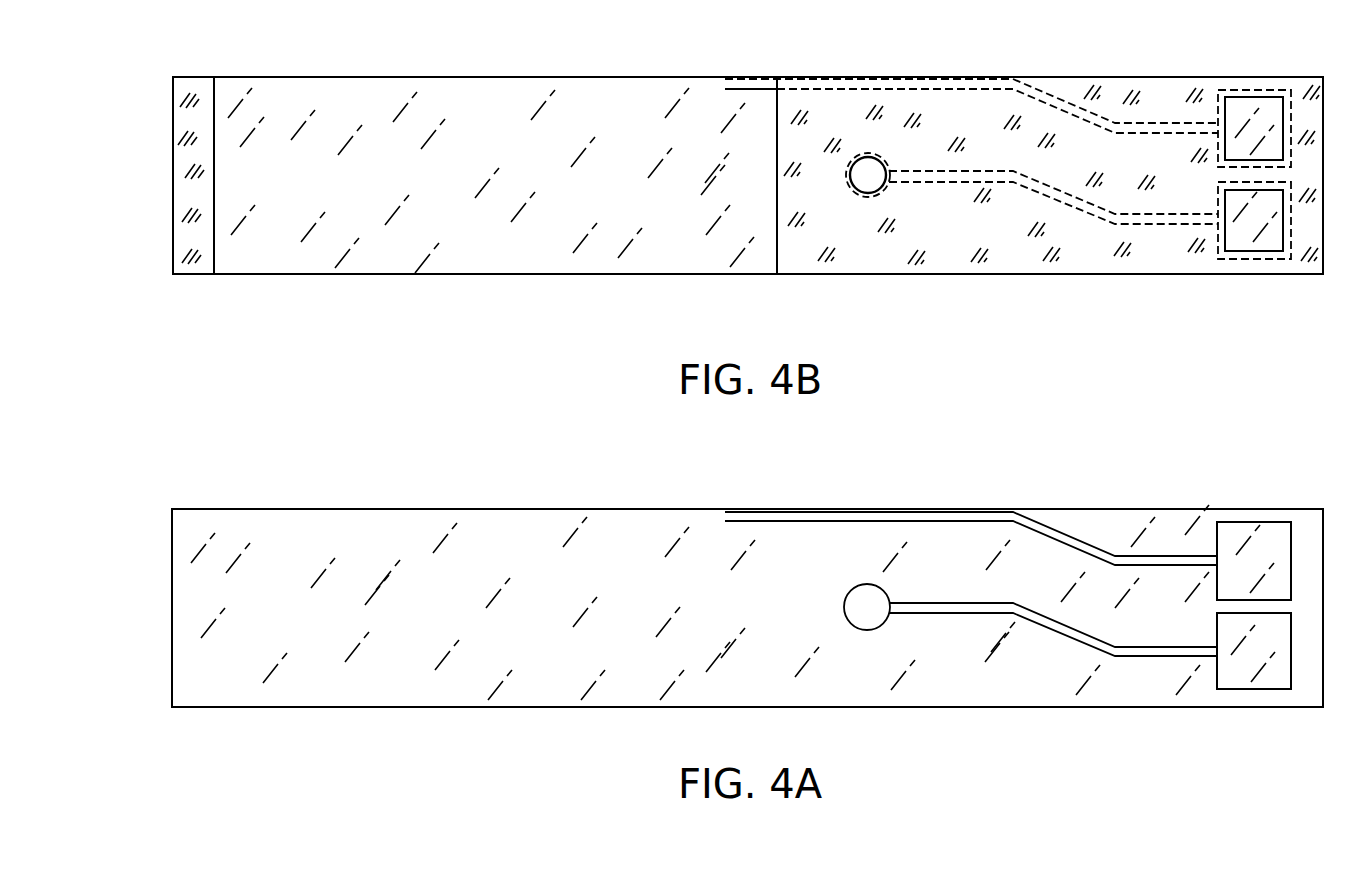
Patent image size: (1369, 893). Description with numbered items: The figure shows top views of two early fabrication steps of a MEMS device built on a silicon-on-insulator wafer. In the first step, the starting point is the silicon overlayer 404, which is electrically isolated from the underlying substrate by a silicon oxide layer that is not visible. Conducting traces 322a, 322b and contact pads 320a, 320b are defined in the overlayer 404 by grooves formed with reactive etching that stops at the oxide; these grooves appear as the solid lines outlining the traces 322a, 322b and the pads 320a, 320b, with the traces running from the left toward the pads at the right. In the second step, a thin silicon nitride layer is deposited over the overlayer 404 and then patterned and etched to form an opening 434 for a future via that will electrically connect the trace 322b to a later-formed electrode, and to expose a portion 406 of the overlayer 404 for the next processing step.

In FIG. 4B, the exposed portion of overlayer 406 is at (458, 104).
In FIG. 4B, the opening 434 is at (845, 181).
In FIG. 4A, the overlayer 404 is at (172, 651).
In FIG. 4A, the conducting trace 322a is at (845, 522).
In FIG. 4A, the conducting trace 322b is at (957, 613).
In FIG. 4A, the contact pad 320a is at (1233, 540).
In FIG. 4A, the contact pad 320b is at (1278, 676).